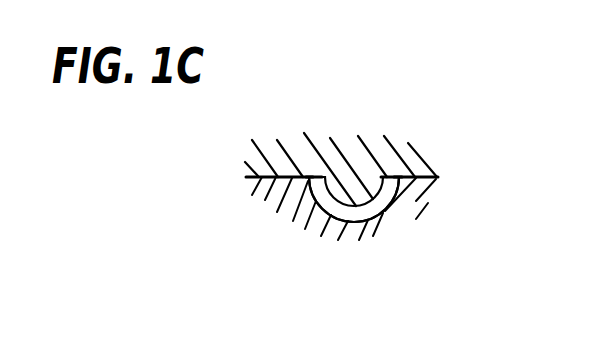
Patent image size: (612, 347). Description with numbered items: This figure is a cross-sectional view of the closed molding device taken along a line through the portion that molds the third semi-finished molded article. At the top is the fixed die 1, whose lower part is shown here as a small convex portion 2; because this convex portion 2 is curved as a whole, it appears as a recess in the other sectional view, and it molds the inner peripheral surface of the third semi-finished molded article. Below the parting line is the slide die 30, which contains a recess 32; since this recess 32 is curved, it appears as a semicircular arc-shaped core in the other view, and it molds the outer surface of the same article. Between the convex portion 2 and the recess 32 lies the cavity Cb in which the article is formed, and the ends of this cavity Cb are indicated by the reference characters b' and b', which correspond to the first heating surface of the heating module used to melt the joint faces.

The fixed die 1 is at (399, 138).
The convex portion 2 is at (356, 192).
The slide die 30 is at (398, 182).
The recess 32 is at (375, 221).
The cavity Cb is at (333, 211).
The ends of cavity b' is at (311, 134).